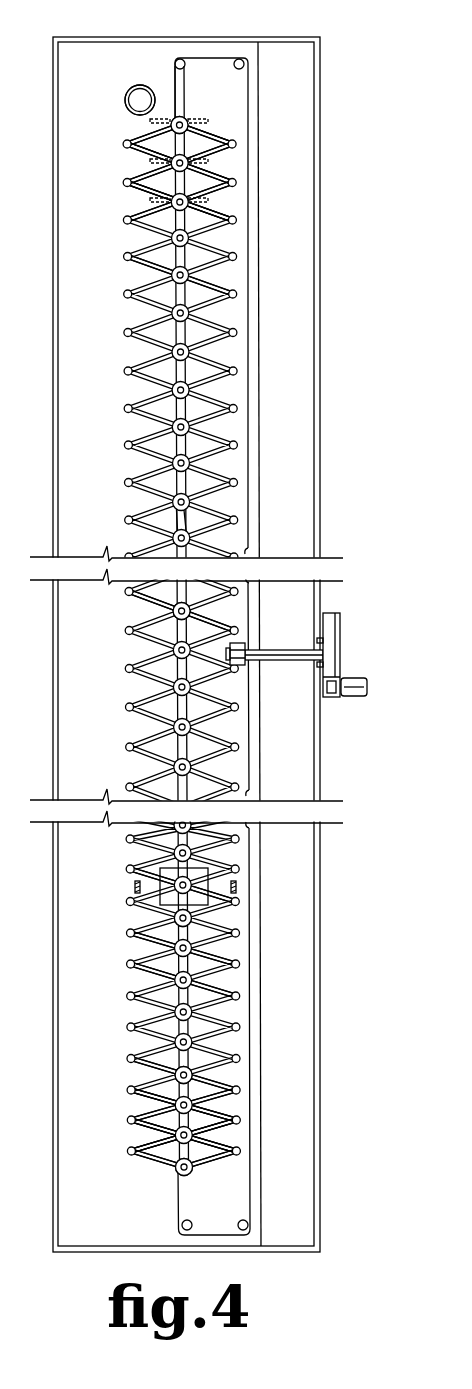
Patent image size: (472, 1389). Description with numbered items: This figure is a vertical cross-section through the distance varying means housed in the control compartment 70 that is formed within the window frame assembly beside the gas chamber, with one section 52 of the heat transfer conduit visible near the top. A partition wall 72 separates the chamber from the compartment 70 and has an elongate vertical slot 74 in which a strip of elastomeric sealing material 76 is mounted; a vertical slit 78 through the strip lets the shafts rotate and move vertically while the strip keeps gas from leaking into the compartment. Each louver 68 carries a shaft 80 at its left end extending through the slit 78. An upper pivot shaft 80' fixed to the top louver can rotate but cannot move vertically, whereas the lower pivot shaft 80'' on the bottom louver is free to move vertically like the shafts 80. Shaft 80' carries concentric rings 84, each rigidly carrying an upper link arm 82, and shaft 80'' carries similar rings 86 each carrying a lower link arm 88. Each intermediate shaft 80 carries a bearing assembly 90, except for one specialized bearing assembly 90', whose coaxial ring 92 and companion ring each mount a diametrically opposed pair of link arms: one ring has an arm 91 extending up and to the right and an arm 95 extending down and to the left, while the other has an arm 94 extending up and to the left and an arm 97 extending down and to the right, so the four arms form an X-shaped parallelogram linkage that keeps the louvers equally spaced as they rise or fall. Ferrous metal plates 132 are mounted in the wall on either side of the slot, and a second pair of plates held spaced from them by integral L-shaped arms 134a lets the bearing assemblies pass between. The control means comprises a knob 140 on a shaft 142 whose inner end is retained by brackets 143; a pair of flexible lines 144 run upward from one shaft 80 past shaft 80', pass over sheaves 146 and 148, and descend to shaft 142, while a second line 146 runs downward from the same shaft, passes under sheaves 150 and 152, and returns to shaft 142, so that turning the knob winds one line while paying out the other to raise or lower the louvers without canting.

The conduit section 52 is at (126, 106).
The louvers 68 is at (150, 201).
The control compartment 70 is at (314, 402).
The partition wall 72 is at (90, 97).
The vertical slot 74 is at (154, 266).
The strip of elastomeric sealing material 76 is at (189, 518).
The vertical slit 78 is at (188, 340).
The shaft 80 is at (138, 646).
The upper pivot shaft 80' is at (198, 112).
The lower pivot shaft 80'' is at (148, 1178).
The upper link arm 82 is at (216, 136).
The rings 84 is at (168, 117).
The rings 86 is at (196, 1172).
The lower link arm 88 is at (139, 1157).
The intermediate bearing assembly 90 is at (214, 765).
The specialized bearing assembly 90' is at (214, 866).
The arm 91 is at (241, 178).
The ring 92 is at (173, 612).
The arm 94 is at (137, 152).
The arm 95 is at (138, 173).
The arm 97 is at (222, 217).
The ferrous metal plates 132 is at (162, 905).
The L-shaped arm 134a is at (134, 890).
The knob 140 is at (336, 636).
The shaft 142 is at (281, 661).
The brackets 143 is at (240, 642).
The flexible lines 144 is at (174, 70).
The sheave / second flexible line 146 is at (180, 58).
The sheave 148 is at (241, 58).
The sheave 150 is at (182, 1226).
The sheave 152 is at (242, 1222).